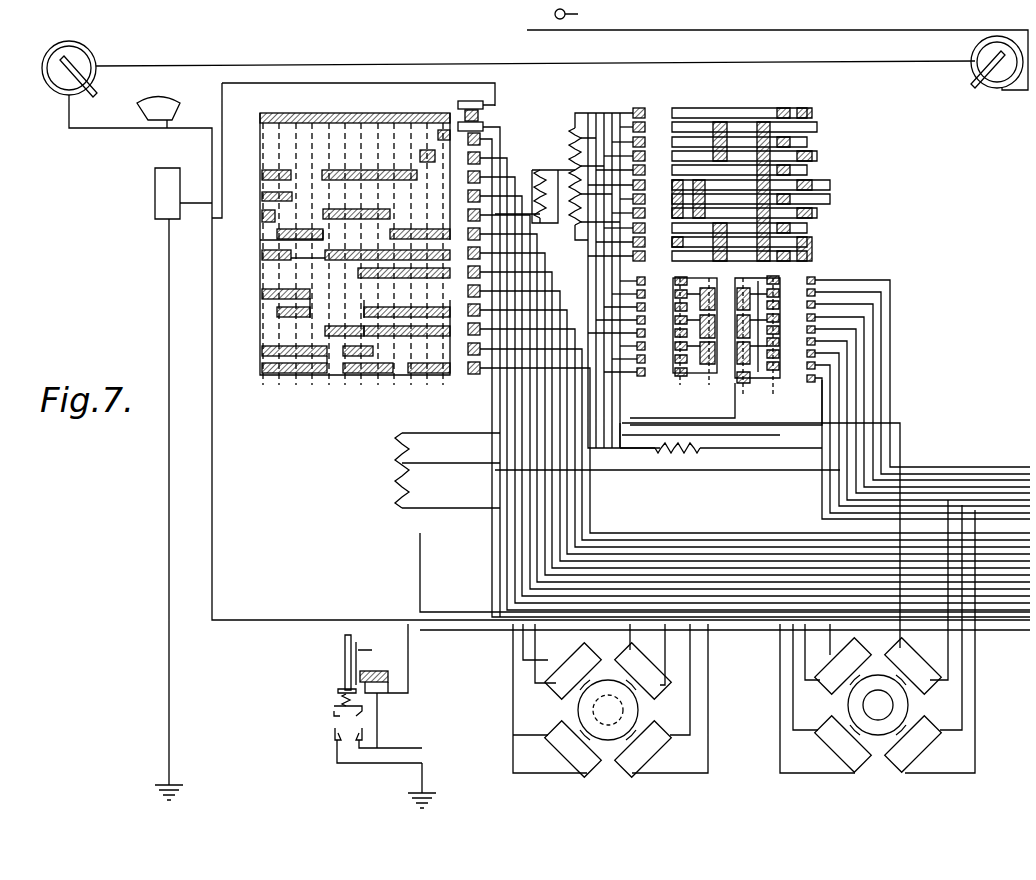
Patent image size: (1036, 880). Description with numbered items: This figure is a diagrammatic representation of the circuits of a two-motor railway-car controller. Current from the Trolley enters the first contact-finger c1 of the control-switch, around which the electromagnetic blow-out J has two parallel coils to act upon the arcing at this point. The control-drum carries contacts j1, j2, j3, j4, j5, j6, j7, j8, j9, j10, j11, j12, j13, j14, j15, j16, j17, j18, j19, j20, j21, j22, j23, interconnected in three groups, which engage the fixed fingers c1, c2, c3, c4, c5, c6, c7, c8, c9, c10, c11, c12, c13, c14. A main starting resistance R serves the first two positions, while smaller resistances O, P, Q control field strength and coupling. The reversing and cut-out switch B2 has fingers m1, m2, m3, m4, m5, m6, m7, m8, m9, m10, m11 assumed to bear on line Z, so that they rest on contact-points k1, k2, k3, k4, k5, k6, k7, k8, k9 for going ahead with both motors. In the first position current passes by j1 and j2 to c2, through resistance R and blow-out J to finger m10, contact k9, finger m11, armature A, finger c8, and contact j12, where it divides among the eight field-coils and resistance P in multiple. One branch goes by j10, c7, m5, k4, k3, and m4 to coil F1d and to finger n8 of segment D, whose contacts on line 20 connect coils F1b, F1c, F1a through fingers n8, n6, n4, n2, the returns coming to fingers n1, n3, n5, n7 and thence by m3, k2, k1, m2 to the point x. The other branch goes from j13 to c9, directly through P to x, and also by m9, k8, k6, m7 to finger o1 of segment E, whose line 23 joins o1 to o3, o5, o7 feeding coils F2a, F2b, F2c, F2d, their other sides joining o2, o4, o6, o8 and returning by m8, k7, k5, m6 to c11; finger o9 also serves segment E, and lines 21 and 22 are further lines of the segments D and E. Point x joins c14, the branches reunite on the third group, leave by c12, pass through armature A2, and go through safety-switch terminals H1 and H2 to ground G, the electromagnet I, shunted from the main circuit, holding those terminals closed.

The trolley Trolley is at (777, 45).
The ground G is at (155, 790).
The electromagnetic blow-out J is at (355, 238).
The contact j1 is at (260, 120).
The contact j2 is at (438, 137).
The contact j3 is at (420, 156).
The contact j4 is at (355, 174).
The contact j5 is at (262, 178).
The contact j6 is at (262, 198).
The contact j7 is at (390, 212).
The contact j8 is at (262, 219).
The contact j9 is at (323, 237).
The contact j10 is at (390, 236).
The contact j11 is at (262, 258).
The contact j12 is at (334, 260).
The contact j13 is at (412, 278).
The contact j14 is at (262, 295).
The contact j15 is at (280, 318).
The contact j16 is at (364, 312).
The contact j17 is at (424, 336).
The contact j18 is at (325, 332).
The contact j19 is at (373, 349).
The contact j20 is at (262, 354).
The contact j21 is at (424, 373).
The contact j22 is at (366, 373).
The contact j23 is at (268, 373).
The contact-finger c1 is at (479, 351).
The contact-finger c2 is at (741, 373).
The contact-finger c3 is at (741, 379).
The contact-finger c4 is at (741, 385).
The contact-finger c5 is at (741, 391).
The contact-finger c6 is at (741, 397).
The contact-finger c7 is at (741, 403).
The contact-finger c8 is at (741, 409).
The contact-finger c9 is at (741, 415).
The contact-finger c10 is at (741, 421).
The contact-finger c11 is at (741, 427).
The contact-finger c12 is at (741, 433).
The contact-finger c13 is at (741, 440).
The contact-finger c14 is at (741, 446).
The resistance R is at (395, 478).
The resistance P is at (569, 144).
The resistance O is at (544, 196).
The resistance Q is at (721, 448).
The point X x is at (612, 115).
The finger m1 is at (650, 112).
The finger m2 is at (644, 126).
The finger m3 is at (640, 141).
The finger m4 is at (636, 155).
The finger m5 is at (632, 169).
The finger m6 is at (628, 184).
The finger m7 is at (644, 198).
The finger m8 is at (640, 212).
The finger m9 is at (636, 227).
The finger m10 is at (634, 241).
The finger m11 is at (630, 255).
The reversing and cut-out switch B2 is at (835, 185).
The line Z is at (722, 125).
The contact-point k1 is at (716, 135).
The contact-point k2 is at (713, 142).
The contact-point k3 is at (735, 180).
The contact-point k4 is at (752, 145).
The contact-point k5 is at (812, 186).
The contact-point k6 is at (812, 205).
The contact-point k7 is at (738, 215).
The contact-point k8 is at (730, 250).
The contact-point k9 is at (714, 254).
The contact-finger n1 is at (643, 280).
The contact-finger n2 is at (639, 293).
The contact-finger n3 is at (635, 306).
The contact-finger n4 is at (631, 319).
The contact-finger n5 is at (627, 332).
The contact-finger n6 is at (643, 345).
The contact-finger n7 is at (639, 358).
The contact-finger n8 is at (635, 371).
The segment D is at (695, 344).
The segment E is at (757, 349).
The line 20 is at (685, 391).
The drum segment 21 is at (711, 387).
The drum segment 22 is at (747, 399).
The line 23 is at (775, 395).
The contact-finger o1 is at (910, 368).
The contact-finger o2 is at (910, 378).
The contact-finger o3 is at (910, 387).
The contact-finger o4 is at (910, 397).
The contact-finger o5 is at (910, 406).
The contact-finger o6 is at (910, 415).
The contact-finger o7 is at (910, 424).
The contact-finger o8 is at (910, 434).
The contact-finger o9 is at (910, 443).
The electromagnet I is at (376, 658).
The terminal H1 is at (335, 735).
The terminal H2 is at (334, 708).
The armature A is at (608, 710).
The armature A2 is at (878, 705).
The field-coil F1a is at (562, 661).
The field-coil F1b is at (643, 661).
The field-coil F1c is at (557, 700).
The field-coil F1d is at (661, 700).
The field-coil F2a is at (838, 659).
The field-coil F2b is at (916, 662).
The field-coil F2c is at (825, 698).
The field-coil F2d is at (930, 701).